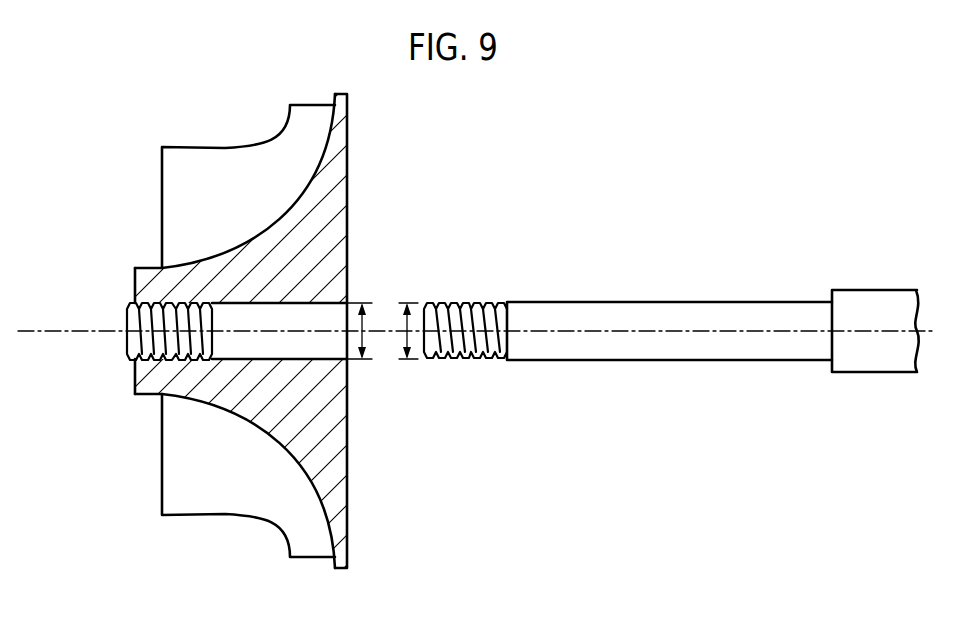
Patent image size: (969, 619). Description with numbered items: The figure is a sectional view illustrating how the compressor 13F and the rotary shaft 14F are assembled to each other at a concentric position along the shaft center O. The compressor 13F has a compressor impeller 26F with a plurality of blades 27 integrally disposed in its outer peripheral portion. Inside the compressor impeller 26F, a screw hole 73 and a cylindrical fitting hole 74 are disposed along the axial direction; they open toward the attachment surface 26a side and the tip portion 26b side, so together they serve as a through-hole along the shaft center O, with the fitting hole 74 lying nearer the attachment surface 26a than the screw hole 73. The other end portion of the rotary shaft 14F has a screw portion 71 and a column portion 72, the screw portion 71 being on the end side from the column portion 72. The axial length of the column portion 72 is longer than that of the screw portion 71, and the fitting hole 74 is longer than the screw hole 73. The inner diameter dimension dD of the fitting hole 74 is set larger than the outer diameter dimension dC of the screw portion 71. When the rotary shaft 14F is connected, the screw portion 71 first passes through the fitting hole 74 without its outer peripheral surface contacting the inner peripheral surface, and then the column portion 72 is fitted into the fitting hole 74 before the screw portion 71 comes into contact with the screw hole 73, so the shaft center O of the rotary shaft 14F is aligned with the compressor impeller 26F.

The compressor 13F is at (124, 277).
The rotary shaft 14F is at (729, 293).
The attachment surface 26a is at (348, 160).
The tip portion 26b is at (132, 293).
The compressor impeller 26F is at (150, 394).
The blade 27 is at (197, 170).
The screw portion 71 is at (473, 300).
The column portion 72 is at (592, 300).
The screw hole 73 is at (163, 313).
The fitting hole 74 is at (348, 263).
The shaft center O is at (48, 337).
The inner diameter dimension of the fitting hole dD is at (377, 338).
The outer diameter dimension of the screw portion dC is at (390, 337).